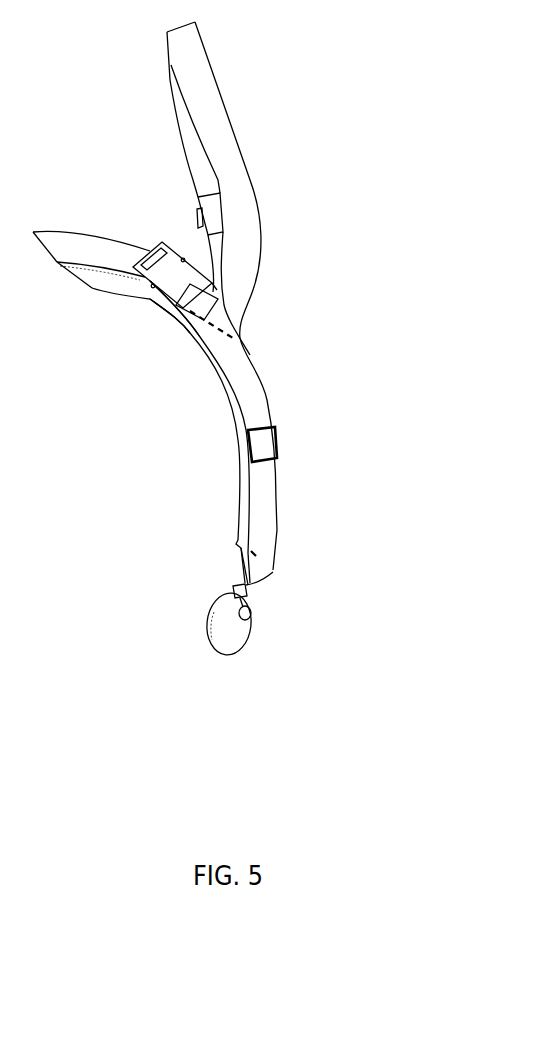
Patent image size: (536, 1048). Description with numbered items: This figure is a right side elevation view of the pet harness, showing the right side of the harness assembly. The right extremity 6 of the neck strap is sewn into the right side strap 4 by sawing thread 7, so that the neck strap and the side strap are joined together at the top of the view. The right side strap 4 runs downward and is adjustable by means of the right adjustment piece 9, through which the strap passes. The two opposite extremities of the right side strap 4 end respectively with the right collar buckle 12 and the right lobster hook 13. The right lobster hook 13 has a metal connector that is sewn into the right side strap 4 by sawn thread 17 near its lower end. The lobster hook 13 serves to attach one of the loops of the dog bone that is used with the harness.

The right side strap 4 is at (270, 388).
The right extremity 6 is at (268, 285).
The sawing thread 7 is at (194, 325).
The right adjustment piece 9 is at (240, 465).
The right collar buckle 12 is at (162, 238).
The right lobster hook 13 is at (262, 608).
The sawn thread 17 is at (276, 562).